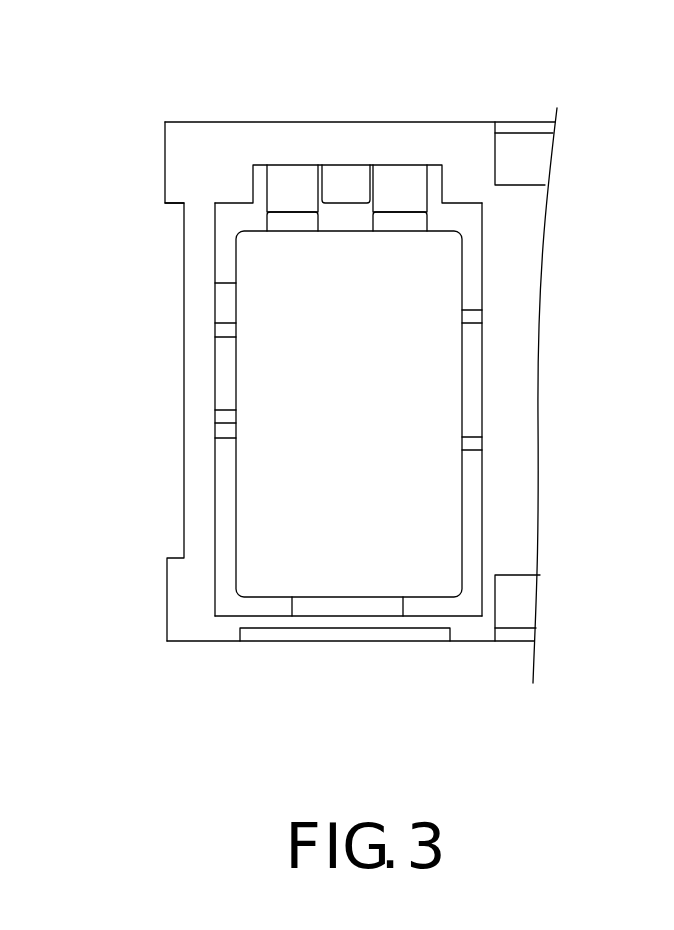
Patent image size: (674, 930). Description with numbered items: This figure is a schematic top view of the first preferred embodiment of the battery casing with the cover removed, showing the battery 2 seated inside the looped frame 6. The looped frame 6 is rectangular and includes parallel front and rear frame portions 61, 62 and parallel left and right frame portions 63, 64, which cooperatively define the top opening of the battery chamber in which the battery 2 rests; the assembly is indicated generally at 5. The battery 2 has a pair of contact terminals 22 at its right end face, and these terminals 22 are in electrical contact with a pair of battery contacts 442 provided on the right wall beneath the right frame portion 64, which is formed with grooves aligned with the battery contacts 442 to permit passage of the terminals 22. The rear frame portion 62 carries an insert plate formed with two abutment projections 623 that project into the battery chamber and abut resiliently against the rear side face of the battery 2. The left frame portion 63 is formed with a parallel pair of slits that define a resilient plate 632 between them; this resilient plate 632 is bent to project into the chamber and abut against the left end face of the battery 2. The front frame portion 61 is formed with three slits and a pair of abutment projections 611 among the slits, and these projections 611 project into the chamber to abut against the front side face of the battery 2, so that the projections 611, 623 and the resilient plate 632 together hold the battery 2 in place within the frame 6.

The battery 2 is at (273, 512).
The contact terminals 22 is at (400, 228).
The battery contacts 442 is at (295, 187).
The battery assembly 5 is at (276, 309).
The looped frame 6 is at (364, 384).
The front frame portion 61 is at (197, 545).
The abutment projections 611 is at (223, 332).
The rear frame portion 62 is at (497, 478).
The abutment projections 623 is at (470, 328).
The left frame portion 63 is at (270, 622).
The resilient plate 632 is at (388, 604).
The right frame portion 64 is at (278, 138).